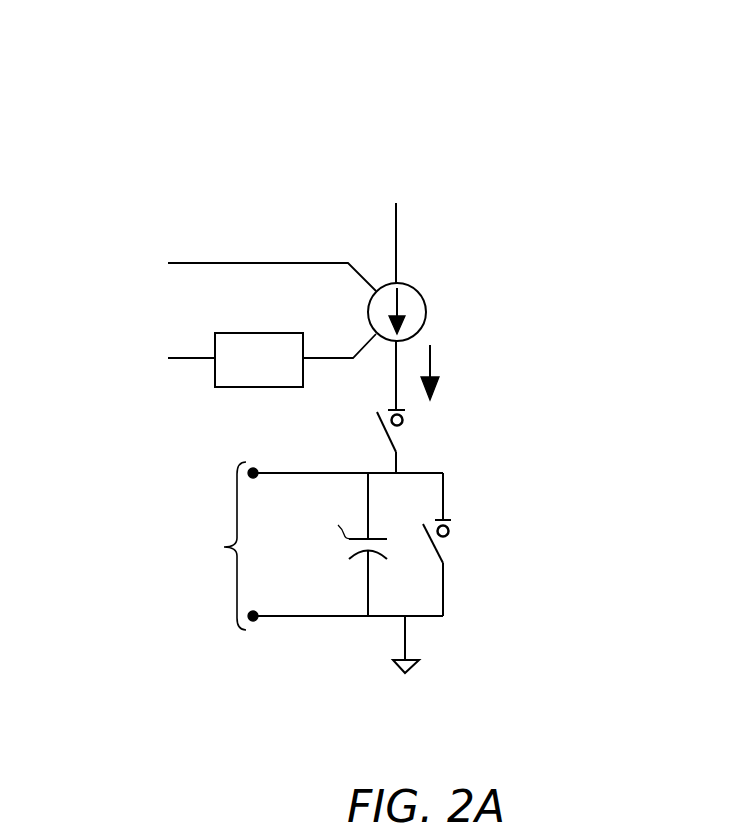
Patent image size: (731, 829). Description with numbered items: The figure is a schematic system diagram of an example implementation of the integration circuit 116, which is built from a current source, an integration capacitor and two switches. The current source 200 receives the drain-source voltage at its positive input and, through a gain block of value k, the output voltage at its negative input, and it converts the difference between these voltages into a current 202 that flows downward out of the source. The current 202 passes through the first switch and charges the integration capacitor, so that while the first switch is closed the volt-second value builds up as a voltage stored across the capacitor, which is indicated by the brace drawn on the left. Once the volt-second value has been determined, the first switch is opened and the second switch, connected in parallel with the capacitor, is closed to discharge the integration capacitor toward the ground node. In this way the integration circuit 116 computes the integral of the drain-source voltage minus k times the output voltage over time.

The integration circuit 116 is at (470, 169).
The current source 200 is at (426, 306).
The current 202 is at (430, 363).